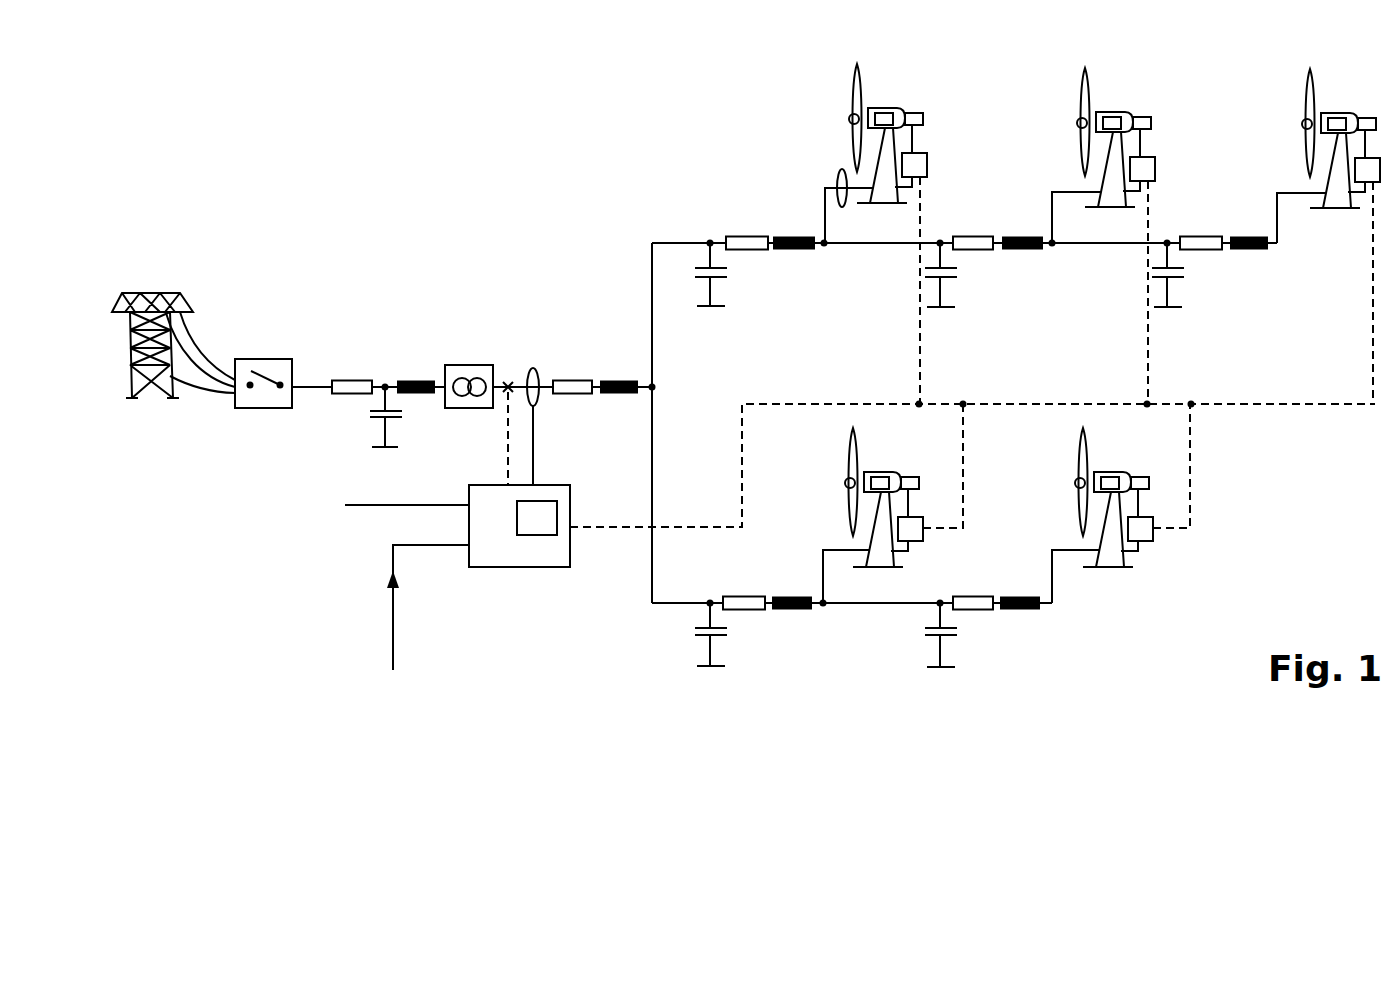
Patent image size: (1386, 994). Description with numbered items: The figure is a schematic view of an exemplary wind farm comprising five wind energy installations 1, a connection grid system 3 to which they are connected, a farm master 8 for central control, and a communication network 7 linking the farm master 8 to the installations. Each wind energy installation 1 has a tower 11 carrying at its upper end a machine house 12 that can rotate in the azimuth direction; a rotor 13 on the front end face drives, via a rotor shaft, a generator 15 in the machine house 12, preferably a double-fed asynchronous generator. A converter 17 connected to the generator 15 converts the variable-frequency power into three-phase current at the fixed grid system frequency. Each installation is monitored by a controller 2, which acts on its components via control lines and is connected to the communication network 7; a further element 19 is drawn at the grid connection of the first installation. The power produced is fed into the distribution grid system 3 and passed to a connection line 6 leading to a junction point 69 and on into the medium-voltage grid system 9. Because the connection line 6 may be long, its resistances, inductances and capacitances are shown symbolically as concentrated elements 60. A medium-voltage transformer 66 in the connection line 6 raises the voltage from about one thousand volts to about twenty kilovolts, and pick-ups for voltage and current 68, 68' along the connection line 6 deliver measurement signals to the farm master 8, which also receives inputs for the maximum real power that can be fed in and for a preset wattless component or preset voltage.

The wind energy installation 1 is at (1072, 321).
The controller 2 is at (935, 264).
The connection grid system 3 is at (672, 603).
The connection line 6 is at (422, 326).
The communication network 7 is at (1283, 405).
The farm master 8 is at (520, 567).
The medium-voltage grid system 9 is at (205, 351).
The tower 11 is at (923, 169).
The machine house 12 is at (883, 83).
The rotor 13 is at (813, 118).
The generator 15 is at (899, 84).
The converter 17 is at (947, 120).
The transformer 19 is at (819, 201).
The concentrated elements 60 is at (384, 361).
The medium-voltage transformer 66 is at (472, 365).
The voltage pick-up 68 is at (560, 389).
The current pick-up 68' is at (522, 389).
The junction point 69 is at (270, 359).